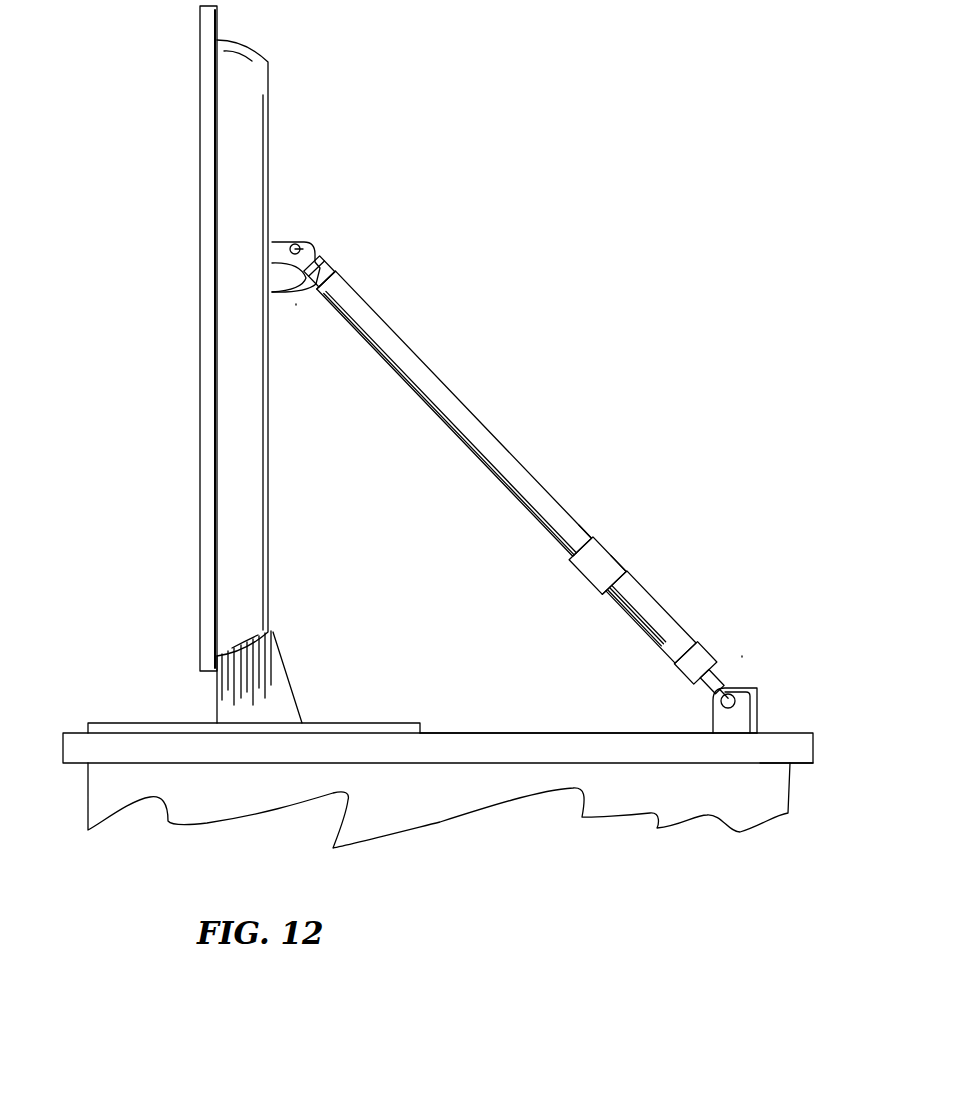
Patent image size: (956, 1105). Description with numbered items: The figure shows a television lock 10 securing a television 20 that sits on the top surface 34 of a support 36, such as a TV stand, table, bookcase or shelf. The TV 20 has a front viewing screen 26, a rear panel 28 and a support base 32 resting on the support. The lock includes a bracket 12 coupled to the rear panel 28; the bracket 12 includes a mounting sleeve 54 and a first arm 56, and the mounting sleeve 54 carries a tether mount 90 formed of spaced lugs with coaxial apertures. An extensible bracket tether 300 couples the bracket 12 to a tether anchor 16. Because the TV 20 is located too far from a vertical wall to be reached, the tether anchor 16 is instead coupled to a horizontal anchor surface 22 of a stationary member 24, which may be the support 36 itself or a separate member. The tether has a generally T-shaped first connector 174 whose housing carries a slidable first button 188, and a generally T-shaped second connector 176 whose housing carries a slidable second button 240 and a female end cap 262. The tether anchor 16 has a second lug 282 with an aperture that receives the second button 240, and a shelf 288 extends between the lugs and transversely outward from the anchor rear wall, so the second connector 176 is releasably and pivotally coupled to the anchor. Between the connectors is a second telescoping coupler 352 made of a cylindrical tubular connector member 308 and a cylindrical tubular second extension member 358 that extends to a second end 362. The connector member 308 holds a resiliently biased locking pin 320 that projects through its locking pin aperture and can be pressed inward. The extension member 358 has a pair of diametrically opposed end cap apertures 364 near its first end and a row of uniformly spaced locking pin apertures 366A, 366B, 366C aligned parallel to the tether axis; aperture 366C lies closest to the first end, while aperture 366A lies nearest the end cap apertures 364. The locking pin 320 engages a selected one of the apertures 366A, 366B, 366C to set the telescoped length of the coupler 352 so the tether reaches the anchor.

The television lock 10 is at (587, 332).
The bracket 12 is at (297, 310).
The tether anchor 16 is at (745, 652).
The television 20 is at (195, 117).
The anchor surface 22 is at (793, 732).
The stationary member 24 is at (815, 771).
The front viewing screen 26 is at (200, 182).
The rear panel 28 is at (274, 152).
The support base 32 is at (137, 723).
The top surface 34 is at (452, 730).
The support 36 is at (58, 753).
The mounting sleeve 54 is at (274, 240).
The first arm 56 is at (282, 274).
The tether mount 90 is at (302, 246).
The first connector 174 is at (337, 228).
The second connector 176 is at (718, 615).
The first button 188 is at (323, 250).
The second button 240 is at (754, 690).
The female end cap 262 is at (683, 665).
The second lug 282 is at (723, 720).
The shelf 288 is at (757, 712).
The bracket tether 300 is at (593, 420).
The connector member 308 is at (660, 605).
The locking pin 320 is at (596, 537).
The second telescoping coupler 352 is at (498, 417).
The second extension member 358 is at (438, 376).
The second end 362 is at (605, 600).
The end cap apertures 364 is at (346, 279).
The locking pin aperture 366A is at (579, 522).
The locking pin aperture 366B is at (577, 562).
The locking pin aperture 366C is at (608, 558).